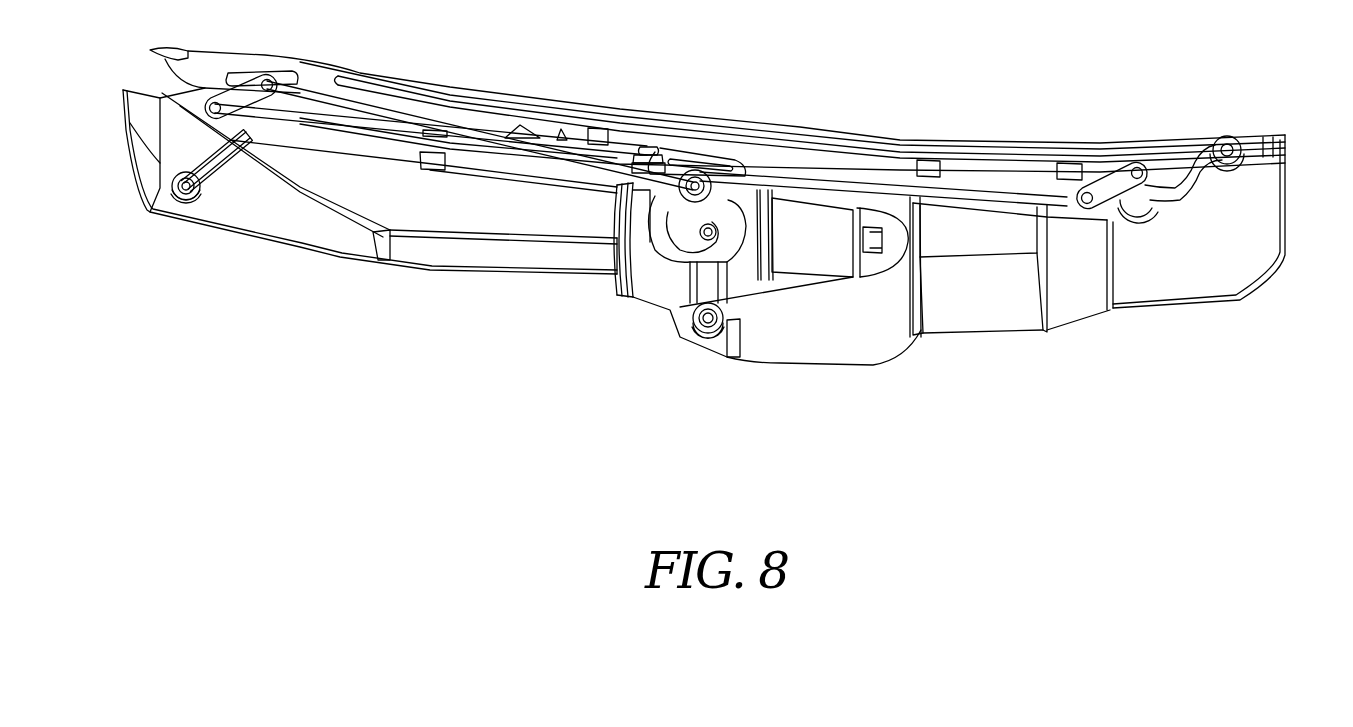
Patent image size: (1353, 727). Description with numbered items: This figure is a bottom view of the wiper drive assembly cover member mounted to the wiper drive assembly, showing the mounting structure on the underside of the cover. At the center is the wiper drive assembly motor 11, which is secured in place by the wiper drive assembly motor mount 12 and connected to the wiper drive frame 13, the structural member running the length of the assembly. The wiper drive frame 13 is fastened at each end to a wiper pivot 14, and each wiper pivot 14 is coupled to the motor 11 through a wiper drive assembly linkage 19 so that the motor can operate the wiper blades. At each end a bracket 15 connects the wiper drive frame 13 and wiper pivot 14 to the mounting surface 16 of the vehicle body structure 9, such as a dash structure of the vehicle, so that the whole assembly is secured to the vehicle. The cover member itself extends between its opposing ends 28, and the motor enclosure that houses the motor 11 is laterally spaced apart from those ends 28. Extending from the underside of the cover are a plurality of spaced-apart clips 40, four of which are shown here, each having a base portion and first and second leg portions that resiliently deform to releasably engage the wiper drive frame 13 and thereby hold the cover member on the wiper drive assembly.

The vehicle body structure 9 is at (841, 352).
The wiper drive assembly motor 11 is at (803, 253).
The wiper drive assembly motor mount 12 is at (710, 281).
The wiper drive frame 13 is at (450, 141).
The wiper pivot 14 is at (1137, 205).
The bracket 15 is at (228, 146).
The mounting surface 16 is at (218, 220).
The wiper drive assembly linkage 19 is at (263, 118).
The opposing ends of the cover member 28 is at (127, 128).
The clip 40 is at (597, 135).